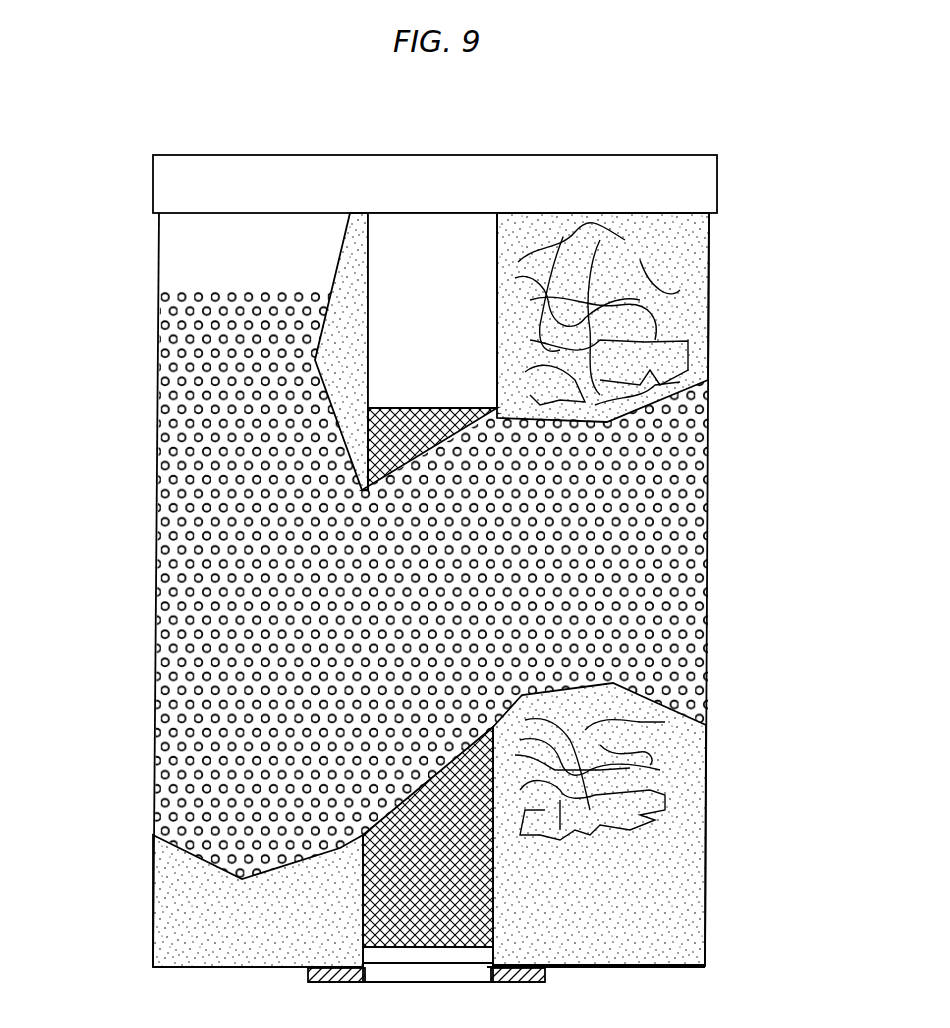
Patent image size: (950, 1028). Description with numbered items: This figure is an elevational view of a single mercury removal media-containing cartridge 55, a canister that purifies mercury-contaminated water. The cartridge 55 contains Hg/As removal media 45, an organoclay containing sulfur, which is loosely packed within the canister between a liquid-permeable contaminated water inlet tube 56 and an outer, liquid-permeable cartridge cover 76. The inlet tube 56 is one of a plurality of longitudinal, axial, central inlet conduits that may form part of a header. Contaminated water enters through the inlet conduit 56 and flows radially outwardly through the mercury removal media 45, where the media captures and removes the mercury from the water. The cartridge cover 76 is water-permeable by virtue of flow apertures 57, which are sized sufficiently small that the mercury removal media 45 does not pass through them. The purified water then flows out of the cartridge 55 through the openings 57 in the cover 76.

The mercury removal media-containing cartridge 55 is at (78, 418).
The cartridge cover 76 is at (155, 596).
The flow apertures 57 is at (687, 443).
The mercury removal media 45 is at (540, 247).
The central inlet conduit 56 is at (467, 888).